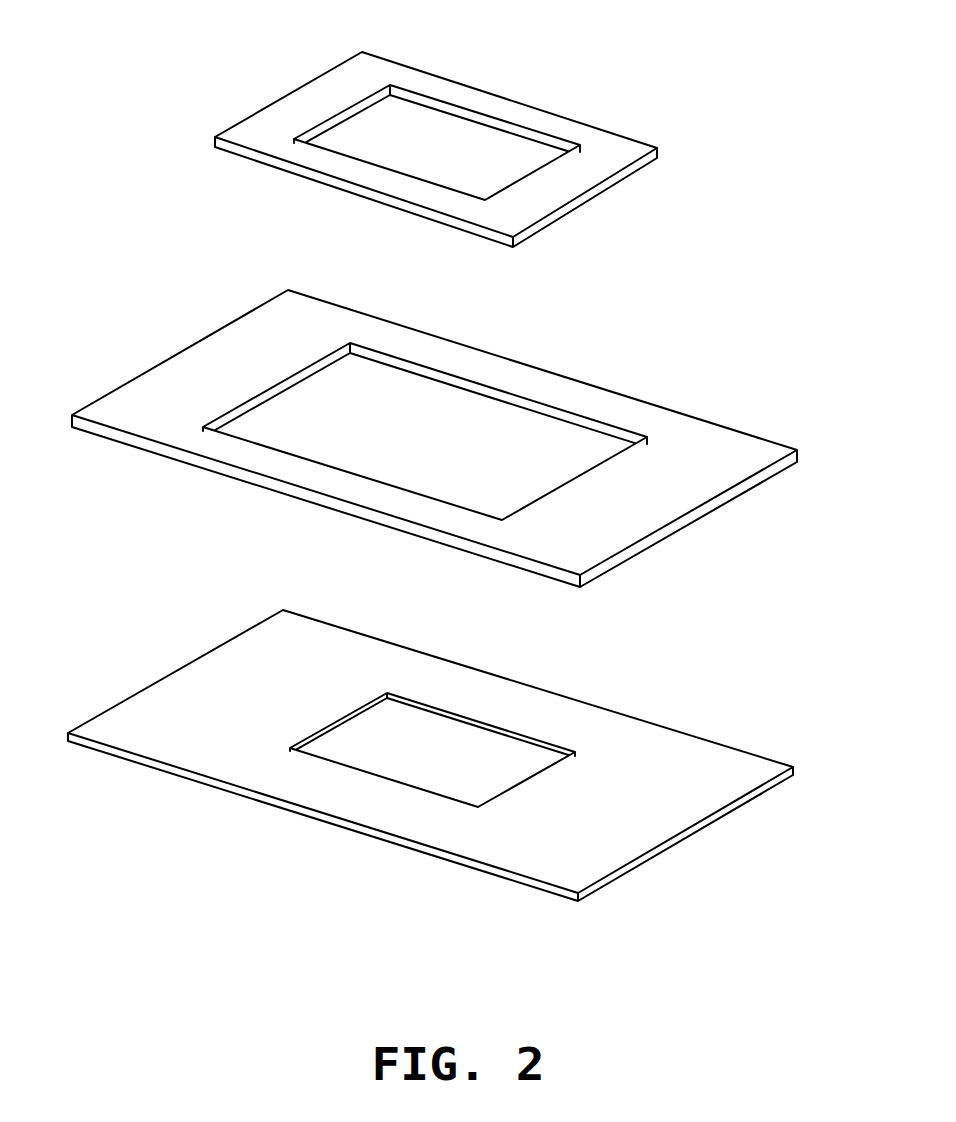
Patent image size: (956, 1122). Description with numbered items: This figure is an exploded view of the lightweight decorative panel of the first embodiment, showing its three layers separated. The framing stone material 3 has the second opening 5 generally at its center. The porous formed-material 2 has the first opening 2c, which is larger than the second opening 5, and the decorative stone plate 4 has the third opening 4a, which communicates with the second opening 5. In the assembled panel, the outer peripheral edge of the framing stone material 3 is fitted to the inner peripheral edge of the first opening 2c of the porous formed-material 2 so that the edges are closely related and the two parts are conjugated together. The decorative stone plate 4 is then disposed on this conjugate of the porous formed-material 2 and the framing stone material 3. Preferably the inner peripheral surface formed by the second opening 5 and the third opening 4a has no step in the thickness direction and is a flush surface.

The porous formed-material 2 is at (705, 448).
The first opening 2c is at (590, 426).
The framing stone material 3 is at (620, 152).
The decorative stone plate 4 is at (620, 842).
The third opening 4a is at (527, 740).
The second opening 5 is at (445, 108).